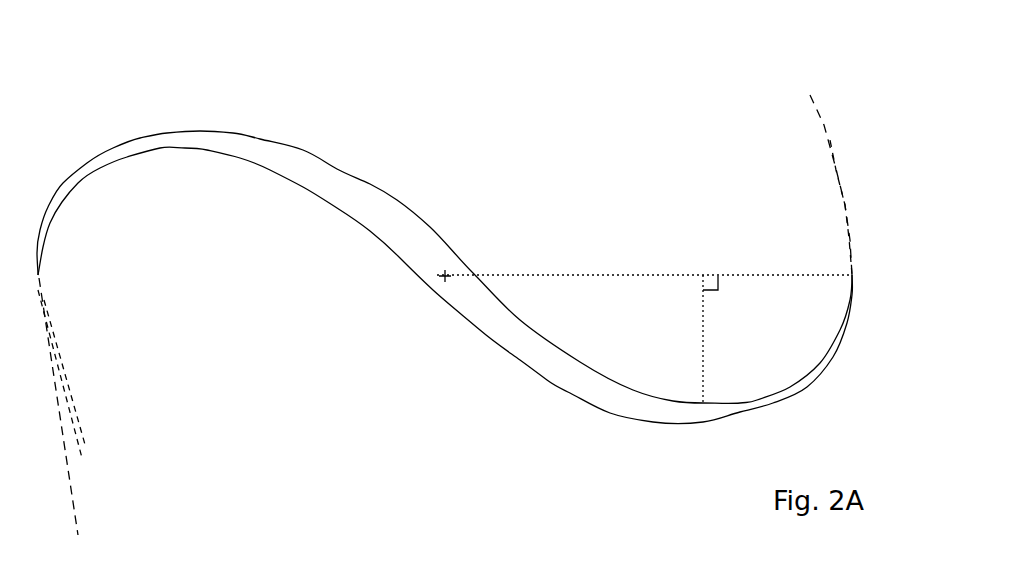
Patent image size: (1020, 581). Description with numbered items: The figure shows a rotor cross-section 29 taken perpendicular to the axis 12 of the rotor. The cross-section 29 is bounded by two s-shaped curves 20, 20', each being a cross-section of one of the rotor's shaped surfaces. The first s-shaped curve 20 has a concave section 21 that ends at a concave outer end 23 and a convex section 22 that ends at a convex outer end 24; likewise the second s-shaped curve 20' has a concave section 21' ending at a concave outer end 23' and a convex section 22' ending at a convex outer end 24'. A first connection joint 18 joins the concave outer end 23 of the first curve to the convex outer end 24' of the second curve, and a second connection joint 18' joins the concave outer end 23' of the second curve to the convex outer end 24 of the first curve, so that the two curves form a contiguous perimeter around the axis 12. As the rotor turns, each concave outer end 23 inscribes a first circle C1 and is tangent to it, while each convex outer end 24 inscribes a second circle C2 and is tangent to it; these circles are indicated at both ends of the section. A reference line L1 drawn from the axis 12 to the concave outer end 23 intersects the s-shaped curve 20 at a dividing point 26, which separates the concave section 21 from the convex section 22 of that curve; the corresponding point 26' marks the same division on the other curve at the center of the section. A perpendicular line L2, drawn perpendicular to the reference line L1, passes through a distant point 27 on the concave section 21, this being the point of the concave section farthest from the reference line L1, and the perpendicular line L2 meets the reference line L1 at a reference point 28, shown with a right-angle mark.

The axis 12 is at (462, 258).
The first connection joint 18 is at (904, 197).
The second connection joint 18' is at (102, 309).
The s-shaped curve 20 is at (505, 124).
The s-shaped curve 20' is at (277, 243).
The concave section 21 is at (580, 314).
The concave section 21' is at (184, 195).
The convex section 22 is at (379, 103).
The convex section 22' is at (478, 397).
The concave outer end 23 is at (794, 246).
The concave outer end 23' is at (86, 264).
The convex outer end 24 is at (102, 355).
The convex outer end 24' is at (897, 248).
The dividing point 26 is at (550, 218).
The center point 26' is at (386, 300).
The distant point 27 is at (703, 400).
The reference point 28 is at (710, 282).
The rotor cross-section 29 is at (433, 367).
The reference line L1 is at (545, 274).
The perpendicular line L2 is at (703, 377).
The first circle C1 is at (834, 172).
The second circle C2 is at (827, 128).